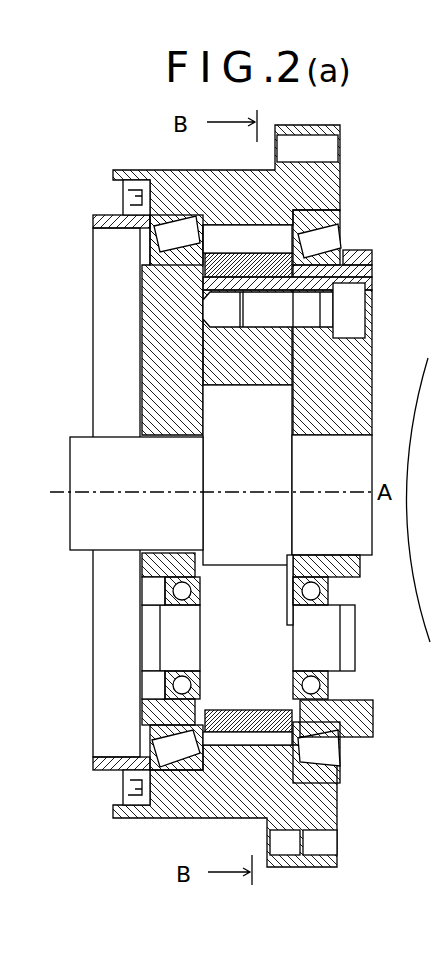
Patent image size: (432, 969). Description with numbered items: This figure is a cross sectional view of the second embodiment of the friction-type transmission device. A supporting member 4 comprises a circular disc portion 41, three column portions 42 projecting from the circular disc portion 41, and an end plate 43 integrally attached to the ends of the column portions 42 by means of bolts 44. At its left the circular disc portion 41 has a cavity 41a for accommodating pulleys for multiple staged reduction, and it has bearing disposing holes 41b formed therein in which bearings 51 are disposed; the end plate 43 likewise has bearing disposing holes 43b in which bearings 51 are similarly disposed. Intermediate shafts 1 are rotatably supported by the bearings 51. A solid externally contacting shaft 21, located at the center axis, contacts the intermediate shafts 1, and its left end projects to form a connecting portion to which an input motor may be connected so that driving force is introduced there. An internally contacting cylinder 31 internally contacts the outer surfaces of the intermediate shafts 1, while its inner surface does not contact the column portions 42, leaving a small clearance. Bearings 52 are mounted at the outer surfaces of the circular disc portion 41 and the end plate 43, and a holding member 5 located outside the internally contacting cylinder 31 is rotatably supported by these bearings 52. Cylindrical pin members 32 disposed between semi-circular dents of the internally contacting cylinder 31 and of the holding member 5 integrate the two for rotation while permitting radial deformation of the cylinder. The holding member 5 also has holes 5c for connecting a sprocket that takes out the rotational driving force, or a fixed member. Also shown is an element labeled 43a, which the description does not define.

The intermediate shaft 1 is at (333, 660).
The supporting member 4 is at (115, 340).
The holding member 5 is at (243, 178).
The hole 5c is at (327, 146).
The externally contacting shaft 21 is at (267, 510).
The internally contacting cylinder 31 is at (208, 785).
The pin member 32 is at (238, 790).
The circular disc portion 41 is at (93, 780).
The cavity 41a is at (117, 235).
The bearing disposing hole 41b is at (145, 578).
The column portion 42 is at (227, 372).
The end plate 43 is at (350, 390).
The ring member flange 43a is at (347, 288).
The bearing disposing hole 43b is at (343, 580).
The bolt 44 is at (352, 304).
The bearing 51 is at (142, 682).
The bearing 52 is at (347, 762).